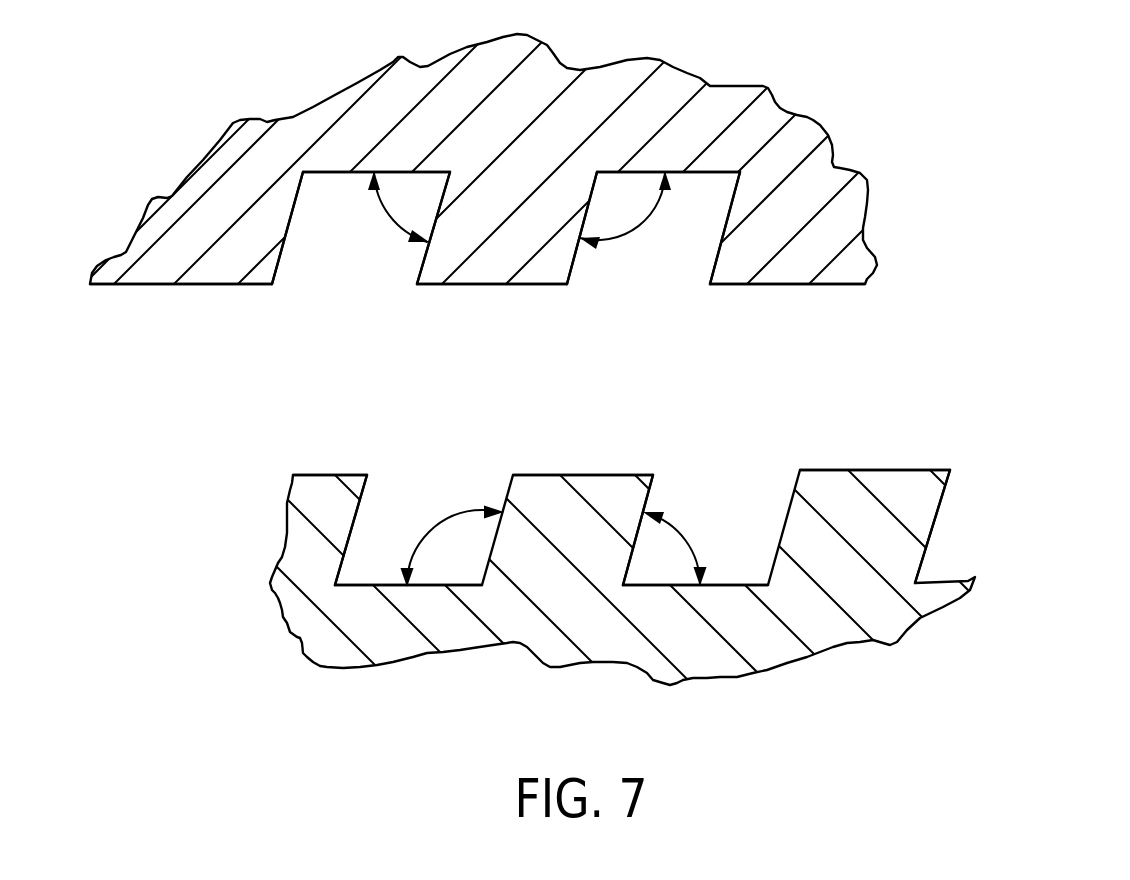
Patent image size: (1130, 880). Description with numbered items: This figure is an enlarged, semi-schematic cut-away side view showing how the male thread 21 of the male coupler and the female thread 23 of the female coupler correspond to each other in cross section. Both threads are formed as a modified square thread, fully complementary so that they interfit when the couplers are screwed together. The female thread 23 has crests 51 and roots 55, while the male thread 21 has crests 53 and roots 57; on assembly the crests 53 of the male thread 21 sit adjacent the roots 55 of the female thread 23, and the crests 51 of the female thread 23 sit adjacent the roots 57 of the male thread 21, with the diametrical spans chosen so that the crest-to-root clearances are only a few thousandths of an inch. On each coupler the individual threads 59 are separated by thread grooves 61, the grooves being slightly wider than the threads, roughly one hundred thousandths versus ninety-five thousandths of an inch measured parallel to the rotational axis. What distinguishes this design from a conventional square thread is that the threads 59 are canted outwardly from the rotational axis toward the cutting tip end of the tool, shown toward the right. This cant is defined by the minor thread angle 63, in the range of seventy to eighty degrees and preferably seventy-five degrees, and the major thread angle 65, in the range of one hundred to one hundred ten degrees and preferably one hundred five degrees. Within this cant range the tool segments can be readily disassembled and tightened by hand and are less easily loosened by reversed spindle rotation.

The male thread 21 is at (1020, 517).
The female thread 23 is at (973, 238).
The crest of female thread 51 is at (207, 285).
The crest of male thread 53 is at (328, 473).
The root of female thread 55 is at (333, 174).
The root of male thread 57 is at (367, 584).
The thread 59 is at (150, 277).
The thread groove 61 is at (328, 278).
The minor thread angle 63 is at (388, 228).
The major thread angle 65 is at (613, 253).